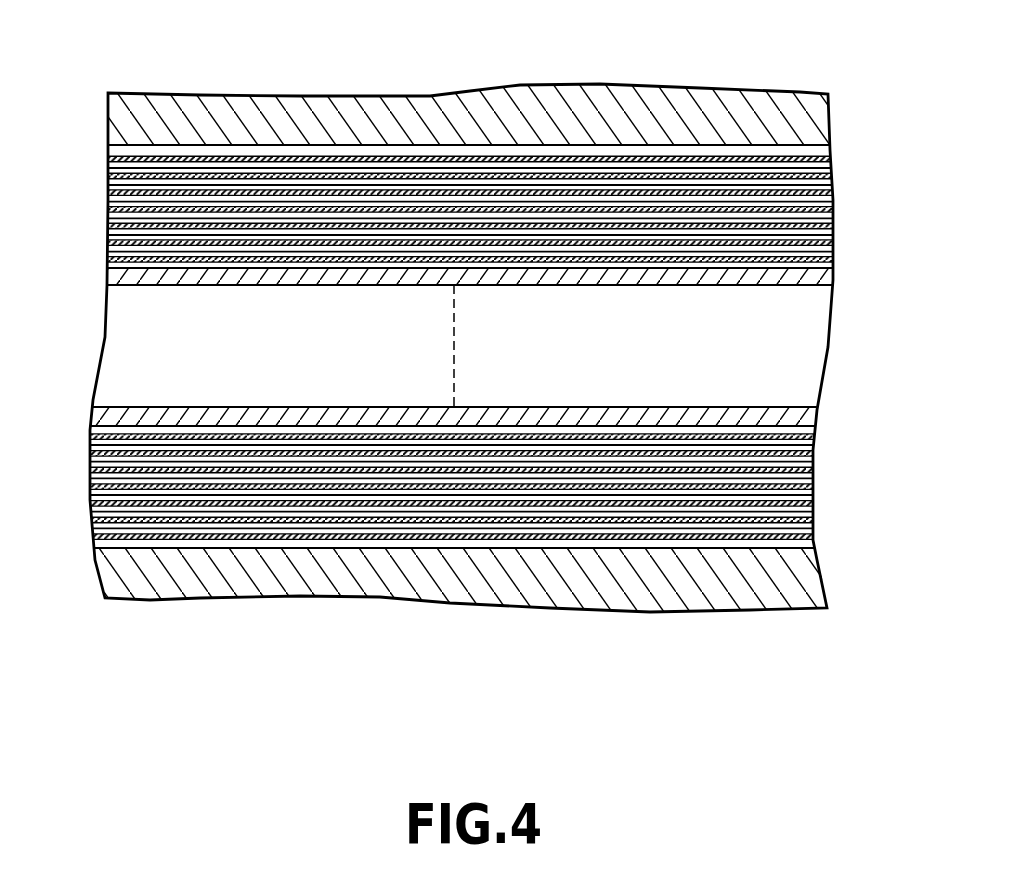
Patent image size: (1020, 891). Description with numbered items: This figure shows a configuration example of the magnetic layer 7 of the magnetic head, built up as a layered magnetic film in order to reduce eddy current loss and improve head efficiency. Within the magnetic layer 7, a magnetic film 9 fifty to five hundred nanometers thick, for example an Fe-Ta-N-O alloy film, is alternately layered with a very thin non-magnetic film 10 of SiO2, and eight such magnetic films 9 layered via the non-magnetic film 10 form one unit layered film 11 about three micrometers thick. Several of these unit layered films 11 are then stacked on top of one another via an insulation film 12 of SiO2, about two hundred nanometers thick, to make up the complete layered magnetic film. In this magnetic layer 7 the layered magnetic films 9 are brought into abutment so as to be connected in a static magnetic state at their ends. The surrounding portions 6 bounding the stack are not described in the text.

The outer cover layer 6 is at (612, 110).
The magnetic layer 7 is at (829, 349).
The magnetic film 9 is at (826, 152).
The non-magnetic film 10 is at (826, 210).
The unit layered film 11 is at (97, 143).
The insulation film 12 is at (824, 277).